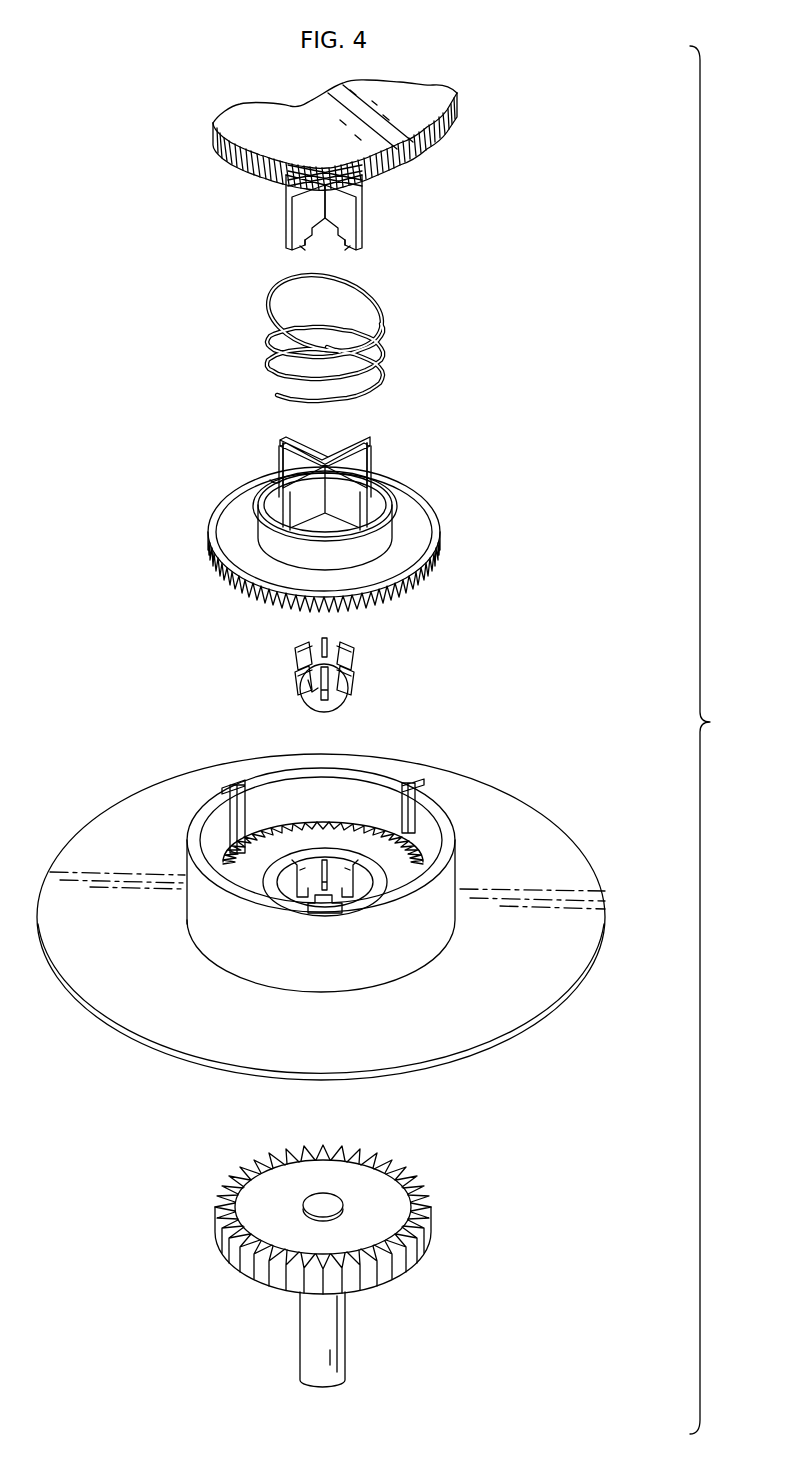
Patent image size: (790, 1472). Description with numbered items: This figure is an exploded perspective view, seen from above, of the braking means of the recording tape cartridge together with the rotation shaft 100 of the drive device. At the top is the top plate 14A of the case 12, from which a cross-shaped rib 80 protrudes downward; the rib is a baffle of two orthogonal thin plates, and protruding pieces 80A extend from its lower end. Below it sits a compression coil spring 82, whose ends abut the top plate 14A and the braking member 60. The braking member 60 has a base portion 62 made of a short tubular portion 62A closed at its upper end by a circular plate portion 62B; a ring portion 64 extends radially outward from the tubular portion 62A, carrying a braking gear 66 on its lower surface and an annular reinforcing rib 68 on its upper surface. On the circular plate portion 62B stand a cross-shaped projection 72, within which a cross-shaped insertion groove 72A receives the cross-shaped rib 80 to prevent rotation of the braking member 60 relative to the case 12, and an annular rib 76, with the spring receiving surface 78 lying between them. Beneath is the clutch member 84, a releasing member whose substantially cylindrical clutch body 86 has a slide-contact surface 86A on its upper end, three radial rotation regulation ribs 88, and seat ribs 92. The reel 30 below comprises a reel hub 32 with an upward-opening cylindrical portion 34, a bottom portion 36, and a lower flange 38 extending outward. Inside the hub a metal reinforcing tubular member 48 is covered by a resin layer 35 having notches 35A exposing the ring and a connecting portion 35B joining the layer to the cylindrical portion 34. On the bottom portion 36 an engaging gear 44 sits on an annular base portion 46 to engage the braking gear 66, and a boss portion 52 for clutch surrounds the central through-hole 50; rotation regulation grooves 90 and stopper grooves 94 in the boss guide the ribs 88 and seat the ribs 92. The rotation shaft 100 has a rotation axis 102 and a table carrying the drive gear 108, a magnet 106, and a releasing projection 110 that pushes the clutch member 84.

The top plate 14A is at (376, 118).
The case 12 is at (413, 102).
The cross-shaped rib 80 is at (327, 223).
The protruding piece 80A is at (300, 248).
The compression coil spring 82 is at (404, 334).
The braking member 60 is at (317, 510).
The insertion groove 72A is at (330, 456).
The cross-shaped projection 72 is at (332, 466).
The annular rib 76 is at (278, 473).
The spring receiving surface 78 is at (270, 480).
The ring portion 64 is at (400, 512).
The reinforcing rib 68 is at (428, 507).
The base portion 62 is at (243, 528).
The tubular portion 62A is at (265, 532).
The circular plate portion 62B is at (258, 500).
The braking gear 66 is at (405, 593).
The clutch member 84 is at (365, 680).
The clutch body 86 is at (346, 697).
The slide-contact surface 86A is at (311, 693).
The rotation regulation rib 88 is at (330, 642).
The seat rib 92 is at (300, 650).
The reel 30 is at (353, 890).
The lower flange 38 is at (570, 940).
The resin layer 35 is at (339, 862).
The notch 35A is at (230, 820).
The connecting portion 35B is at (193, 840).
The bottom portion 36 is at (395, 825).
The cylindrical portion 34 is at (437, 803).
The reel hub 32 is at (541, 700).
The reinforcing tubular member 48 is at (410, 832).
The engaging gear 44 is at (188, 922).
The annular base portion 46 is at (244, 880).
The boss portion for clutch 52 is at (292, 888).
The stopper groove 94 is at (329, 900).
The rotation regulation groove 90 is at (342, 893).
The through-hole 50 is at (333, 907).
The rotation shaft 100 is at (376, 1244).
The magnet 106 is at (290, 1185).
The drive gear 108 is at (398, 1168).
The releasing projection 110 is at (320, 1200).
The rotation axis 102 is at (333, 1330).